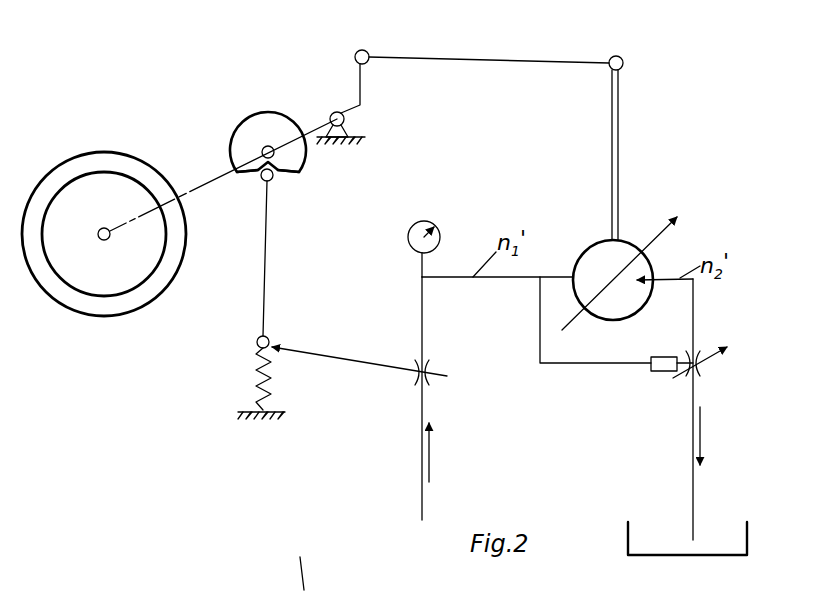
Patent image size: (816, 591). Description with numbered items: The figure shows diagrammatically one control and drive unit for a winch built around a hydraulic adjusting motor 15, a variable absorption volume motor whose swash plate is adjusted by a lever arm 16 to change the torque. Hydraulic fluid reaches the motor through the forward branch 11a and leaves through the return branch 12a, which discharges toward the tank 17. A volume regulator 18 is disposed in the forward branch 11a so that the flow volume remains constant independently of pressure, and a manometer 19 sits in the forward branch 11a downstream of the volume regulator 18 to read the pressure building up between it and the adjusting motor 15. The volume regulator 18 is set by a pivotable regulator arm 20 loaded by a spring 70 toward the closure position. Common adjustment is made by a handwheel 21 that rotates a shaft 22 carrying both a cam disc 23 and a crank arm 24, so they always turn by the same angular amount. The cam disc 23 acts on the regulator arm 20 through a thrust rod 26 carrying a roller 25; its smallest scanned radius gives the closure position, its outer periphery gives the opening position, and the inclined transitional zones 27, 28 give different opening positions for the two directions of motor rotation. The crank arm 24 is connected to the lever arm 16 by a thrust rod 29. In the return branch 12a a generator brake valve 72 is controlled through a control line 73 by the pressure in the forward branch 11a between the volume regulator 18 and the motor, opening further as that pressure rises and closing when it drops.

The handwheel 21 is at (82, 158).
The shaft 22 is at (197, 183).
The cam disc 23 is at (260, 114).
The crank arm 24 is at (361, 92).
The roller 25 is at (273, 181).
The thrust rod 26 is at (266, 277).
The inclined transitional zone 27 is at (245, 177).
The inclined transitional zone 28 is at (287, 176).
The thrust rod 29 is at (485, 58).
The lever arm 16 is at (619, 152).
The hydraulic adjusting motor 15 is at (628, 240).
The manometer 19 is at (428, 222).
The regulator arm 20 is at (322, 353).
The spring 70 is at (257, 372).
The volume regulator 18 is at (408, 378).
The forward branch 11a is at (424, 328).
The control line 73 is at (590, 365).
The generator brake valve 72 is at (700, 343).
The return branch 12a is at (692, 482).
The tank 17 is at (705, 556).